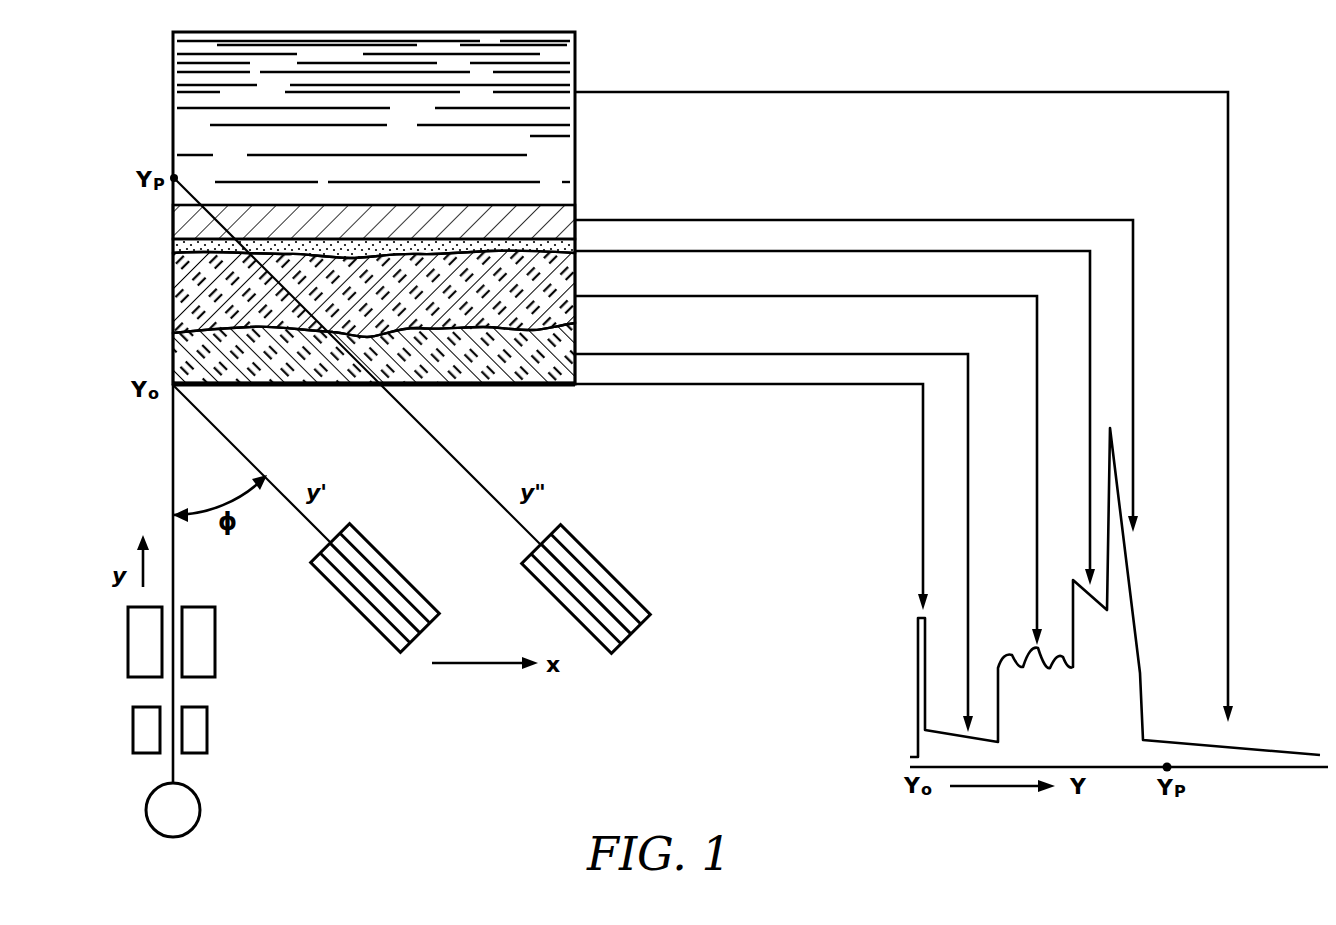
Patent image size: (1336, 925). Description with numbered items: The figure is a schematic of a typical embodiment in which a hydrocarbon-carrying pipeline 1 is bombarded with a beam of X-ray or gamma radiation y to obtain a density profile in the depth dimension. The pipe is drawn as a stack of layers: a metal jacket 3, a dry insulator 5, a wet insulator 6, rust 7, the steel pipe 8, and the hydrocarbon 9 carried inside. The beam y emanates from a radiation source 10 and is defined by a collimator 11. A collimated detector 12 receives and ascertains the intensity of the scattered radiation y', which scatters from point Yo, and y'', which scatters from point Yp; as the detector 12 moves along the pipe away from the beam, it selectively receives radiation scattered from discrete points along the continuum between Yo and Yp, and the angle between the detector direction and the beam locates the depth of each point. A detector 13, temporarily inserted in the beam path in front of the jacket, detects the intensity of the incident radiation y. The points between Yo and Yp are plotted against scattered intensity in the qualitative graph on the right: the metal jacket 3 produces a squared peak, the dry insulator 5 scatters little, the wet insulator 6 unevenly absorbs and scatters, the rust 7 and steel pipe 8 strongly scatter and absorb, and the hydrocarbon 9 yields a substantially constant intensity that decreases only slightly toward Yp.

The pipeline 1 is at (80, 116).
The metal jacket 3 is at (292, 385).
The dry insulator 5 is at (173, 355).
The wet insulator 6 is at (173, 297).
The rust 7 is at (173, 247).
The steel pipe 8 is at (173, 217).
The hydrocarbon 9 is at (173, 85).
The radiation source 10 is at (192, 797).
The collimator 11 is at (215, 635).
The collimated detector 12 is at (597, 556).
The detector 13 is at (207, 725).